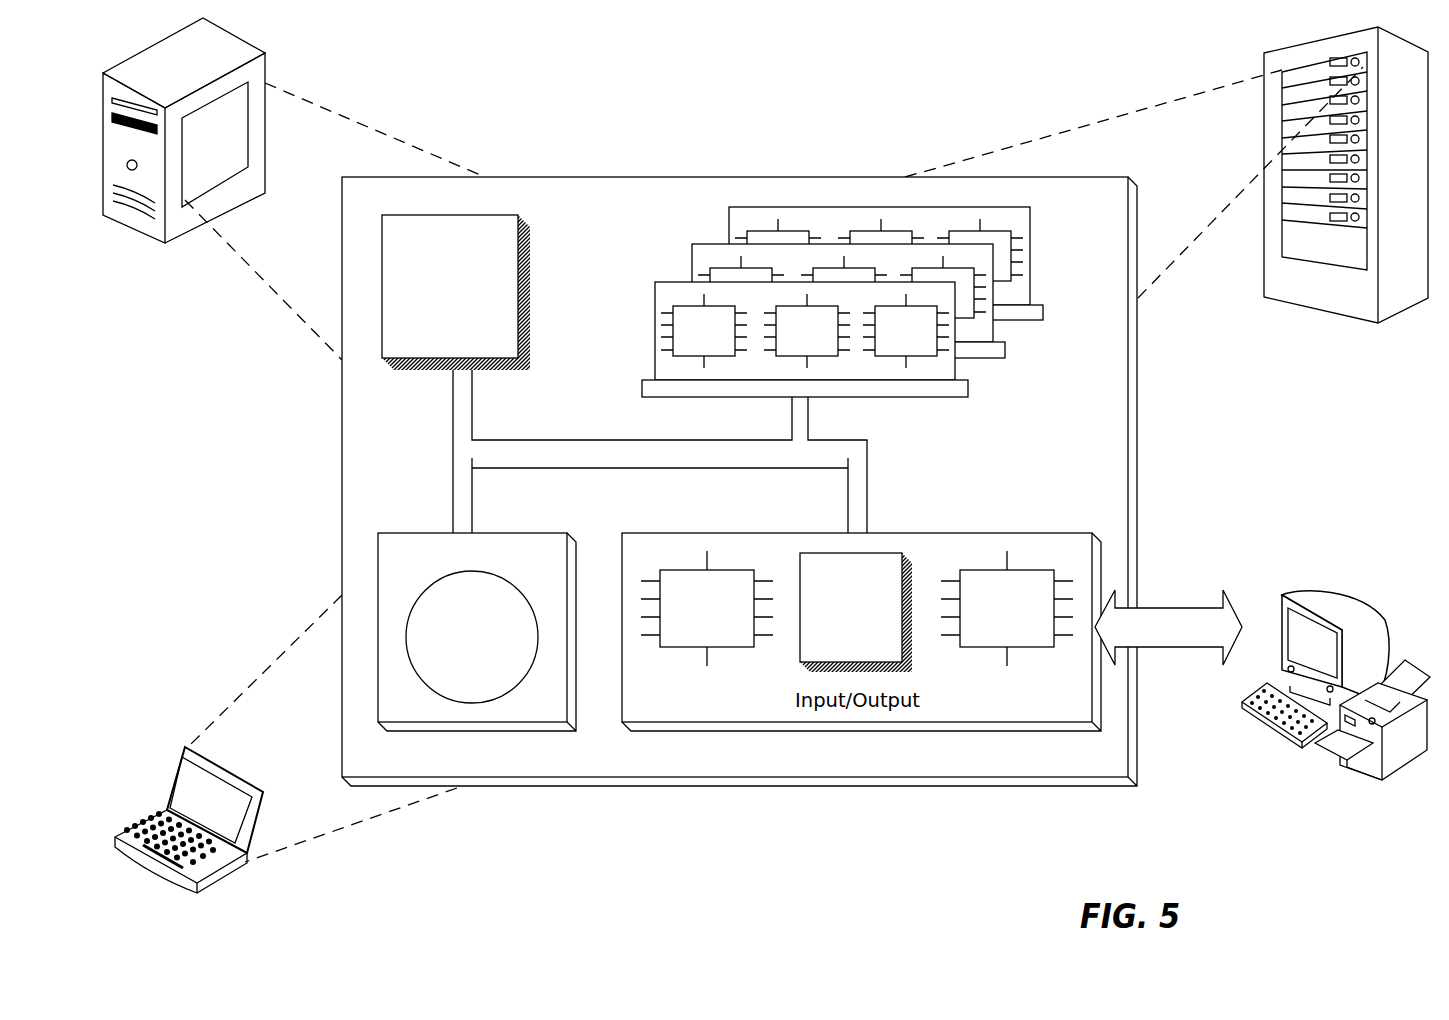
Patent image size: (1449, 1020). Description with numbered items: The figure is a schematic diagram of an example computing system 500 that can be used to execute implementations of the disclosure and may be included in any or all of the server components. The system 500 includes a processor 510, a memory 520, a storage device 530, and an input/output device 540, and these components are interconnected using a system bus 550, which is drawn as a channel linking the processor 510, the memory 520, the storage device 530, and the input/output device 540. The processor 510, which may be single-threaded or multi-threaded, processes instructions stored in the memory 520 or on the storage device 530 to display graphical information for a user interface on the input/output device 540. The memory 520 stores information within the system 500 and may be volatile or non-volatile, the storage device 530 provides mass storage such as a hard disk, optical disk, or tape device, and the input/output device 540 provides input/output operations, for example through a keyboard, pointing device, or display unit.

The computing system 500 is at (550, 97).
The processor 510 is at (508, 351).
The memory 520 is at (1036, 357).
The storage device 530 is at (555, 712).
The input/output device 540 is at (1283, 597).
The system bus 550 is at (653, 458).